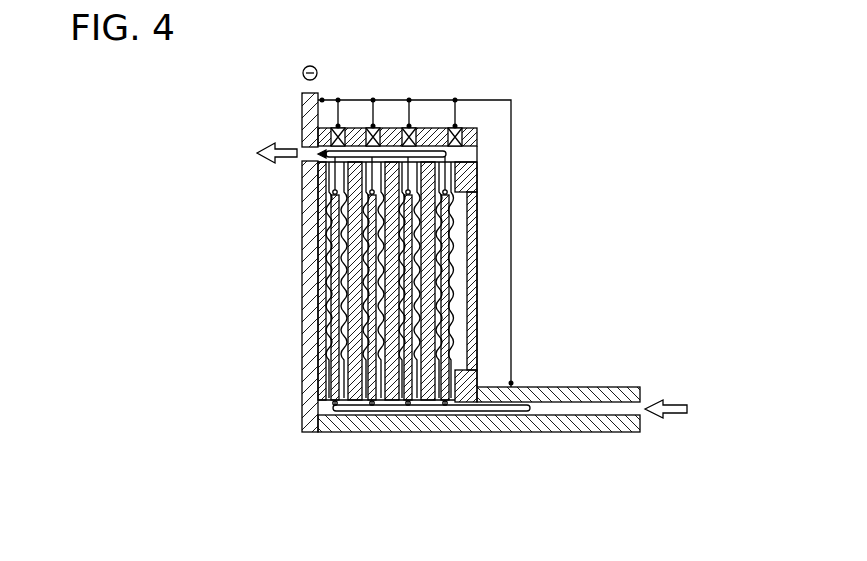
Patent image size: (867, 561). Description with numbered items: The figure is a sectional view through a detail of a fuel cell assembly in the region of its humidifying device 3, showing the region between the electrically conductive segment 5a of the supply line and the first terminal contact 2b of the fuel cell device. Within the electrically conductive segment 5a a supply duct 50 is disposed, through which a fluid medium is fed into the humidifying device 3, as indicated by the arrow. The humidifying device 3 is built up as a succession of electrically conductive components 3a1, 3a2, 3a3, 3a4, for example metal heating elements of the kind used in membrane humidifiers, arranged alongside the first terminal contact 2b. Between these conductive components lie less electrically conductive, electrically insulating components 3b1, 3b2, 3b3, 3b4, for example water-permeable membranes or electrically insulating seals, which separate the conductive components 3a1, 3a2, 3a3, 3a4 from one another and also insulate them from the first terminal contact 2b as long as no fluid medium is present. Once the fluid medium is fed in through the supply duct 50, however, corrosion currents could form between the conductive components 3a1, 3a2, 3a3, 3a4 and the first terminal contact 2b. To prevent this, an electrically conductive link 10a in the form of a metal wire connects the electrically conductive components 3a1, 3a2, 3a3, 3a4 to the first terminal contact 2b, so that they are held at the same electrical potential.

The first terminal contact 2b is at (303, 113).
The electrically conductive link 10a is at (388, 100).
The humidifying device 3 is at (478, 176).
The electrically conductive component 3a1 is at (332, 433).
The electrically conductive component 3a2 is at (375, 433).
The electrically conductive component 3a3 is at (410, 433).
The electrically conductive component 3a4 is at (467, 433).
The electrically insulating component 3b1 is at (322, 433).
The electrically insulating component 3b2 is at (353, 433).
The electrically insulating component 3b3 is at (395, 433).
The electrically insulating component 3b4 is at (432, 433).
The electrically conductive segment 5a is at (572, 388).
The supply duct 50 is at (547, 410).